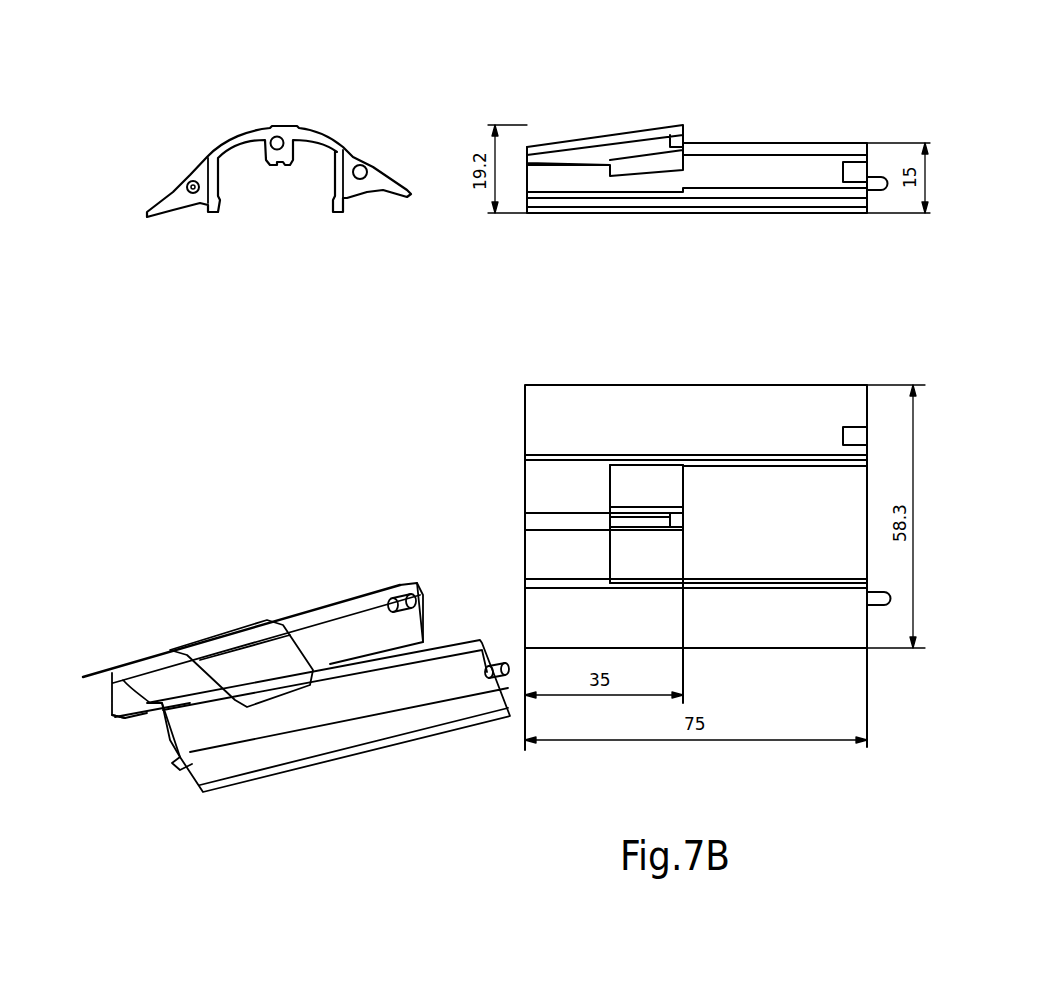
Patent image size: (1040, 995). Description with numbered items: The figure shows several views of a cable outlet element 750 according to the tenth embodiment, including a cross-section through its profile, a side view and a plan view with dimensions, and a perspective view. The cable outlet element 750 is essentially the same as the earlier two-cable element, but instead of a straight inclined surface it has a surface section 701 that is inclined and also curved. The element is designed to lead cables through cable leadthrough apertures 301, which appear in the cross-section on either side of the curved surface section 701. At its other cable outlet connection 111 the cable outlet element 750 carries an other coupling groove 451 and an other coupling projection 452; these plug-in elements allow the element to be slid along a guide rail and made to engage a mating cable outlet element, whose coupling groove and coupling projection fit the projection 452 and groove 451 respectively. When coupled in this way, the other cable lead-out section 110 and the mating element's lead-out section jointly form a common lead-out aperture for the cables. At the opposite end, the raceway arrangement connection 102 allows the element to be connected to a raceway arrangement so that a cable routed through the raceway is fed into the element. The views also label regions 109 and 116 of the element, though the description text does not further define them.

The surface section 701 is at (280, 126).
The other coupling projection 452 is at (190, 183).
The other coupling groove 451 is at (360, 166).
The cable leadthrough apertures 301 is at (247, 175).
The other cable outlet connection 111 is at (872, 150).
The cable outlet element 750 is at (972, 65).
The housing rail 109 is at (525, 185).
The other cable lead-out section 110 is at (845, 509).
The recess 116 is at (437, 632).
The raceway arrangement connection 102 is at (175, 762).